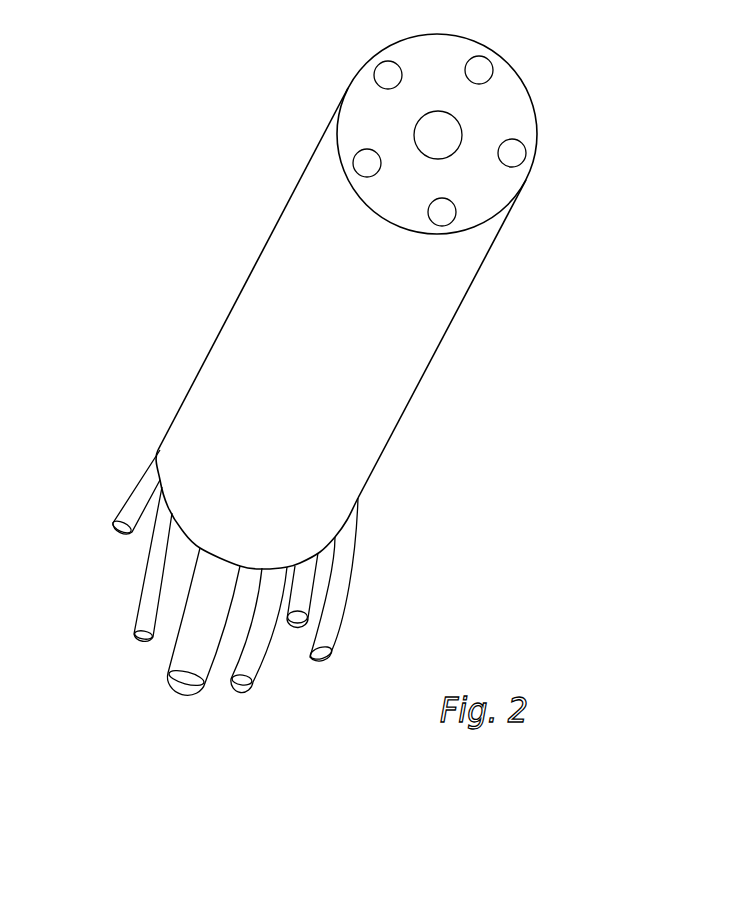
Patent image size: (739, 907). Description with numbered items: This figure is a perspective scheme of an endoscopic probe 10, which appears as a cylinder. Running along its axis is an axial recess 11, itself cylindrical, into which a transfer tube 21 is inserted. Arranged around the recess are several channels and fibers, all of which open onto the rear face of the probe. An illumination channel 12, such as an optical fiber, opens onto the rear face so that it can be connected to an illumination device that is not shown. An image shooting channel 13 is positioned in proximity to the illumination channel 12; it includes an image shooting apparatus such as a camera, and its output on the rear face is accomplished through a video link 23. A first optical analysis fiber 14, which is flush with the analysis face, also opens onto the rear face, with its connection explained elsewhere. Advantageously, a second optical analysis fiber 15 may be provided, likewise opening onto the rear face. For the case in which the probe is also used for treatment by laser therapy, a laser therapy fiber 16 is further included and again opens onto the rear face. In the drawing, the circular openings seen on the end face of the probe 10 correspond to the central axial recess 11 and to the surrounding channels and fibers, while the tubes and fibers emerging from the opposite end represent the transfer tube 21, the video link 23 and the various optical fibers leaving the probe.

The endoscopic probe 10 is at (205, 240).
The axial recess 11 is at (452, 133).
The illumination channel 12 is at (483, 70).
The image shooting channel 13 is at (390, 75).
The first optical analysis fiber 14 is at (518, 158).
The second optical analysis fiber 15 is at (445, 212).
The laser therapy fiber 16 is at (363, 162).
The transfer tube 21 is at (200, 683).
The video link 23 is at (130, 508).